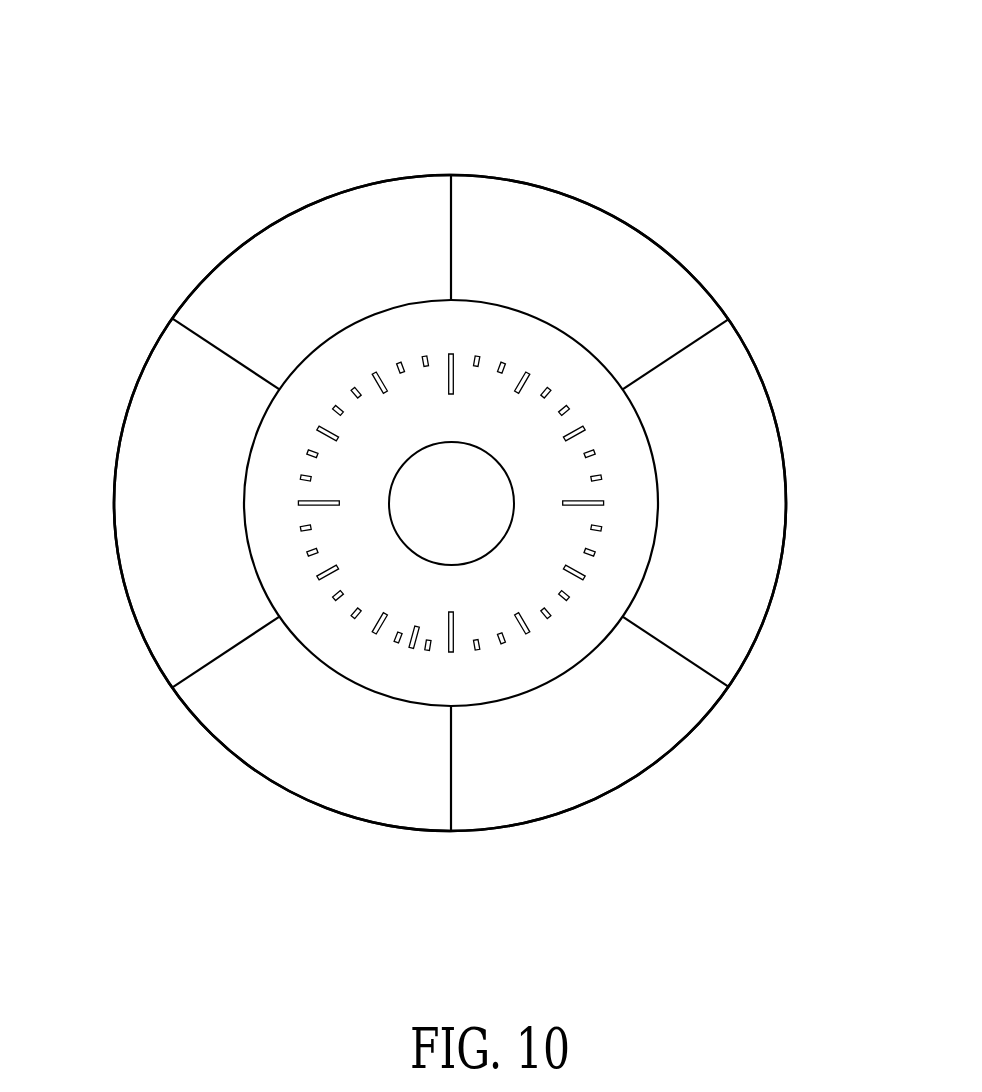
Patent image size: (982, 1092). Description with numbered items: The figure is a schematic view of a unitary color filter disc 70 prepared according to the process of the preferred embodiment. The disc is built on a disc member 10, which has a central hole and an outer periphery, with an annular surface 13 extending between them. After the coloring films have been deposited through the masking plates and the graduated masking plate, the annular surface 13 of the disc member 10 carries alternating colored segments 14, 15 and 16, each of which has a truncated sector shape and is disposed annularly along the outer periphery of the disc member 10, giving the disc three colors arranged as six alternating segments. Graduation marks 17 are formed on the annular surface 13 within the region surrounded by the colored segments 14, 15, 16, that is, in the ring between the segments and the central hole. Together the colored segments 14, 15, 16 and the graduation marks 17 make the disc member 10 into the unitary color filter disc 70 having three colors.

The disc member 10 is at (450, 421).
The unitary color filter disc 70 is at (450, 503).
The annular surface 13 is at (747, 345).
The colored segment 14 is at (398, 198).
The colored segment 15 is at (160, 578).
The colored segment 16 is at (652, 273).
The graduation marks 17 is at (338, 410).